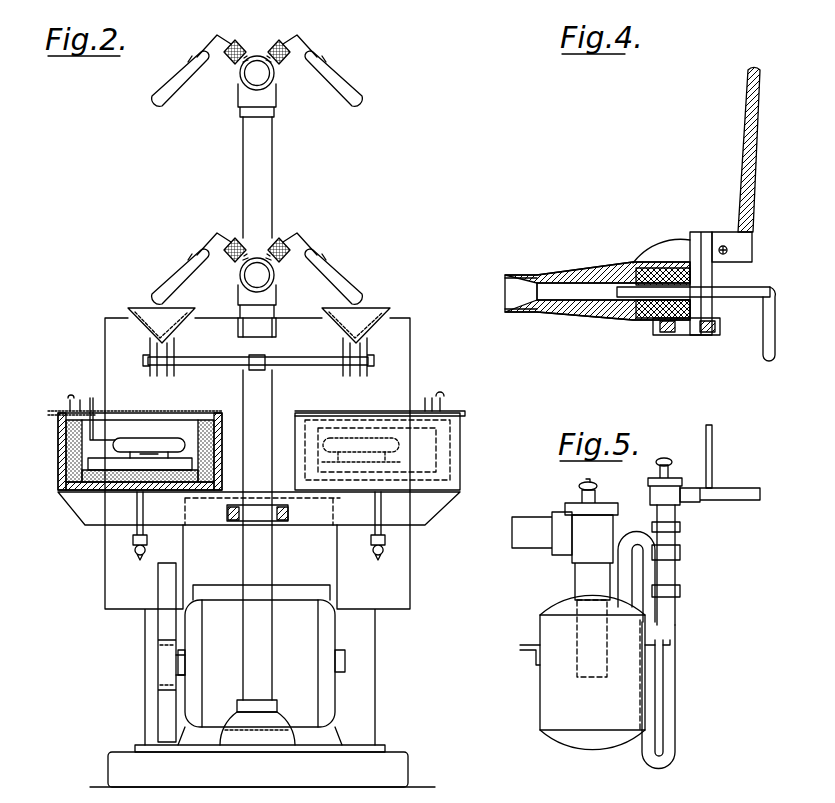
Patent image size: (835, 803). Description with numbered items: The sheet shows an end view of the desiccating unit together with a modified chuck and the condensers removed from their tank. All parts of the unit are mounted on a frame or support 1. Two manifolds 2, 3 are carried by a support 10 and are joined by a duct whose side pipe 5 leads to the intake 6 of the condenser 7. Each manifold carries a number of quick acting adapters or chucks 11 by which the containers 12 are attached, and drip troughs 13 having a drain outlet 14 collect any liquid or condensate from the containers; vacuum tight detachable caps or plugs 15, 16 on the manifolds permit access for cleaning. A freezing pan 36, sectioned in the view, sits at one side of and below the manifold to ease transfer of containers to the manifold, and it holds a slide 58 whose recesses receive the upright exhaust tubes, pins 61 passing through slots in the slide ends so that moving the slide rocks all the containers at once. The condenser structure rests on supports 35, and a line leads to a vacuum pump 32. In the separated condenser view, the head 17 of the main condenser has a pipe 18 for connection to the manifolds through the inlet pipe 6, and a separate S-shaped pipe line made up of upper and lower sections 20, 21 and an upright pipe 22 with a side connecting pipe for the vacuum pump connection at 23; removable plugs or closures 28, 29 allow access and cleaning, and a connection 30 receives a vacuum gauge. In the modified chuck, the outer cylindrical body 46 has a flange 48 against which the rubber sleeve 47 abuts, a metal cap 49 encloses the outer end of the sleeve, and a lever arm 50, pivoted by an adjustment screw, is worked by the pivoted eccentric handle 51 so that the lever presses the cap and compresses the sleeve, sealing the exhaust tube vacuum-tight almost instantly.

In FIG. 2, the frame or support 1 is at (405, 750).
In FIG. 2, the manifold 2 is at (238, 88).
In FIG. 2, the manifold 3 is at (238, 279).
In FIG. 2, the side pipe 5 is at (262, 168).
In FIG. 5, the intake of the condenser 6 is at (540, 517).
In FIG. 5, the condenser 7 is at (555, 672).
In FIG. 2, the support 10 is at (245, 385).
In FIG. 2, the quick acting adapter or chuck 11 is at (232, 45).
In FIG. 2, the container 12 is at (152, 96).
In FIG. 2, the drip trough 13 is at (125, 310).
In FIG. 2, the drain outlet 14 is at (157, 372).
In FIG. 2, the detachable cap or plug 15 is at (276, 86).
In FIG. 2, the detachable cap or plug 16 is at (276, 285).
In FIG. 5, the head of the main condenser 17 is at (560, 607).
In FIG. 5, the pipe 18 is at (575, 580).
In FIG. 5, the upper section of S-shaped duct 20 is at (648, 572).
In FIG. 5, the lower section of S-shaped duct 21 is at (676, 688).
In FIG. 5, the upright pipe 22 is at (677, 590).
In FIG. 5, the vacuum pump connection 23 is at (738, 500).
In FIG. 5, the removable plug or closure 28 is at (580, 492).
In FIG. 5, the removable plug or closure 29 is at (670, 464).
In FIG. 5, the vacuum gauge connection 30 is at (712, 450).
In FIG. 2, the vacuum pump 32 is at (320, 570).
In FIG. 2, the support 35 is at (360, 683).
In FIG. 2, the freezing pan 36 is at (58, 448).
In FIG. 4, the outer cylindrical body 46 is at (565, 272).
In FIG. 4, the rubber sleeve 47 is at (636, 312).
In FIG. 4, the flange 48 is at (628, 270).
In FIG. 4, the metal cap 49 is at (686, 332).
In FIG. 4, the lever arm 50 is at (722, 270).
In FIG. 4, the eccentric handle 51 is at (740, 155).
In FIG. 2, the slide 58 is at (52, 408).
In FIG. 2, the pin 61 is at (78, 398).